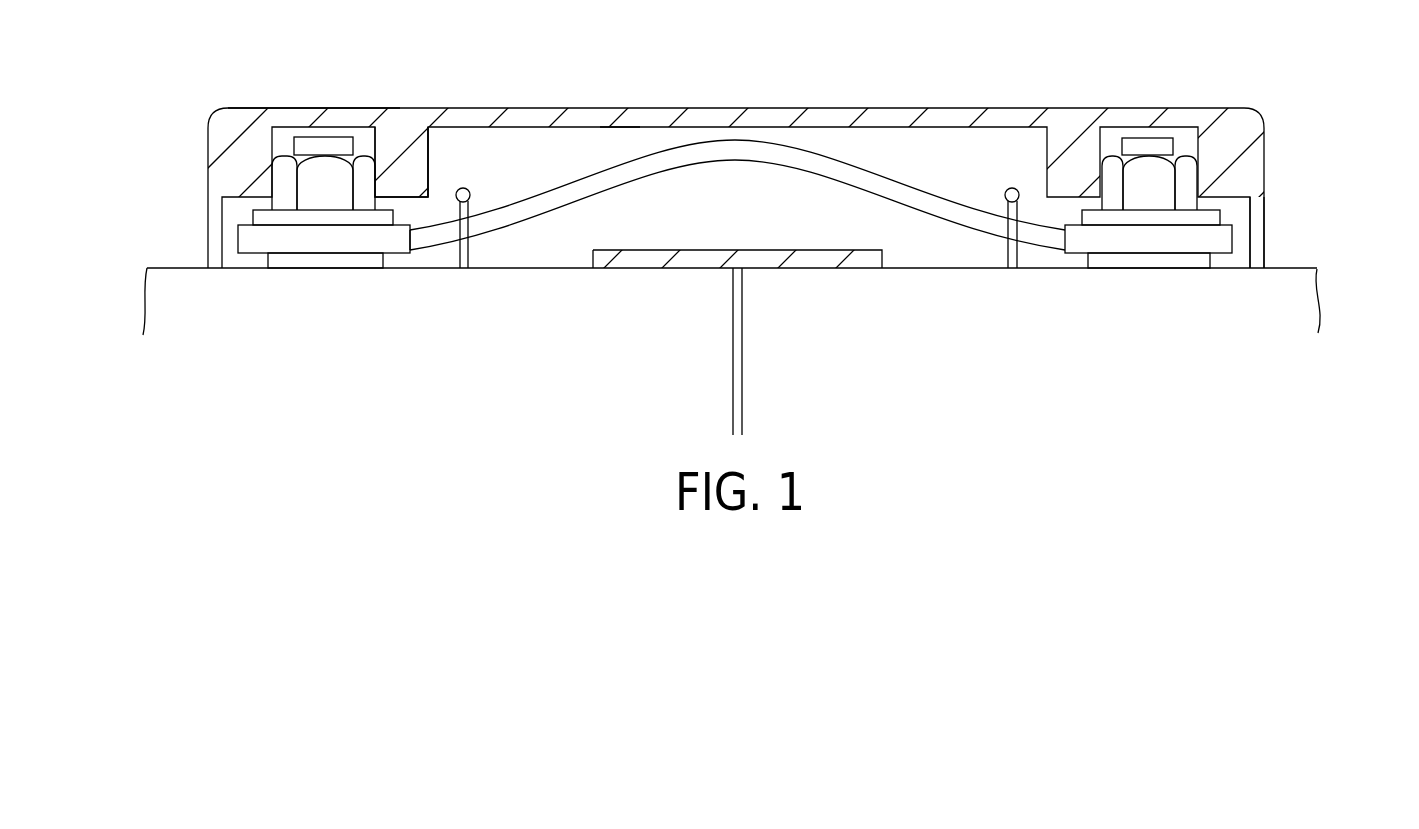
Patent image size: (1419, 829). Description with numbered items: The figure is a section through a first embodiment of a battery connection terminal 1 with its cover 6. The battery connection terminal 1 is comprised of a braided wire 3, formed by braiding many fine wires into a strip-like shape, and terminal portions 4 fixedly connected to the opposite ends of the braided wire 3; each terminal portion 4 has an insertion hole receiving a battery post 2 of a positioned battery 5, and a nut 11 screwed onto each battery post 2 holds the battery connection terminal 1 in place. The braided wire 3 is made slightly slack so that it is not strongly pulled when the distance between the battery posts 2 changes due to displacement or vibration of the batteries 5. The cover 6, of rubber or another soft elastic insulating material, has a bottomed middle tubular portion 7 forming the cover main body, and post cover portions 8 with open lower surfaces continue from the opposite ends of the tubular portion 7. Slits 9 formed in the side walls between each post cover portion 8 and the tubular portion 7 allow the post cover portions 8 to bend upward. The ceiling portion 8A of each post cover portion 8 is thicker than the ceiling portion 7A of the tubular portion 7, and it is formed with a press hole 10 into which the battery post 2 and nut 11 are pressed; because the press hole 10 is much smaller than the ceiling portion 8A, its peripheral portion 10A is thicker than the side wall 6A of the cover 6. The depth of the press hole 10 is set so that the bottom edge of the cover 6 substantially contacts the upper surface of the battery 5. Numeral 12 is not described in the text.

The battery connection terminal 1 is at (817, 142).
The battery post 2 is at (317, 143).
The braided wire 3 is at (726, 141).
The terminal portion 4 is at (250, 240).
The battery 5 is at (160, 302).
The cover 6 is at (903, 99).
The side wall 6A is at (1265, 253).
The tubular portion 7 is at (581, 114).
The ceiling portion 7A is at (610, 127).
The post cover portion 8 is at (338, 114).
The ceiling portion 8A is at (429, 238).
The slit 9 is at (467, 253).
The press hole 10 is at (376, 136).
The peripheral portion 10A is at (432, 160).
The nut 11 is at (285, 172).
The washer 12 is at (263, 214).